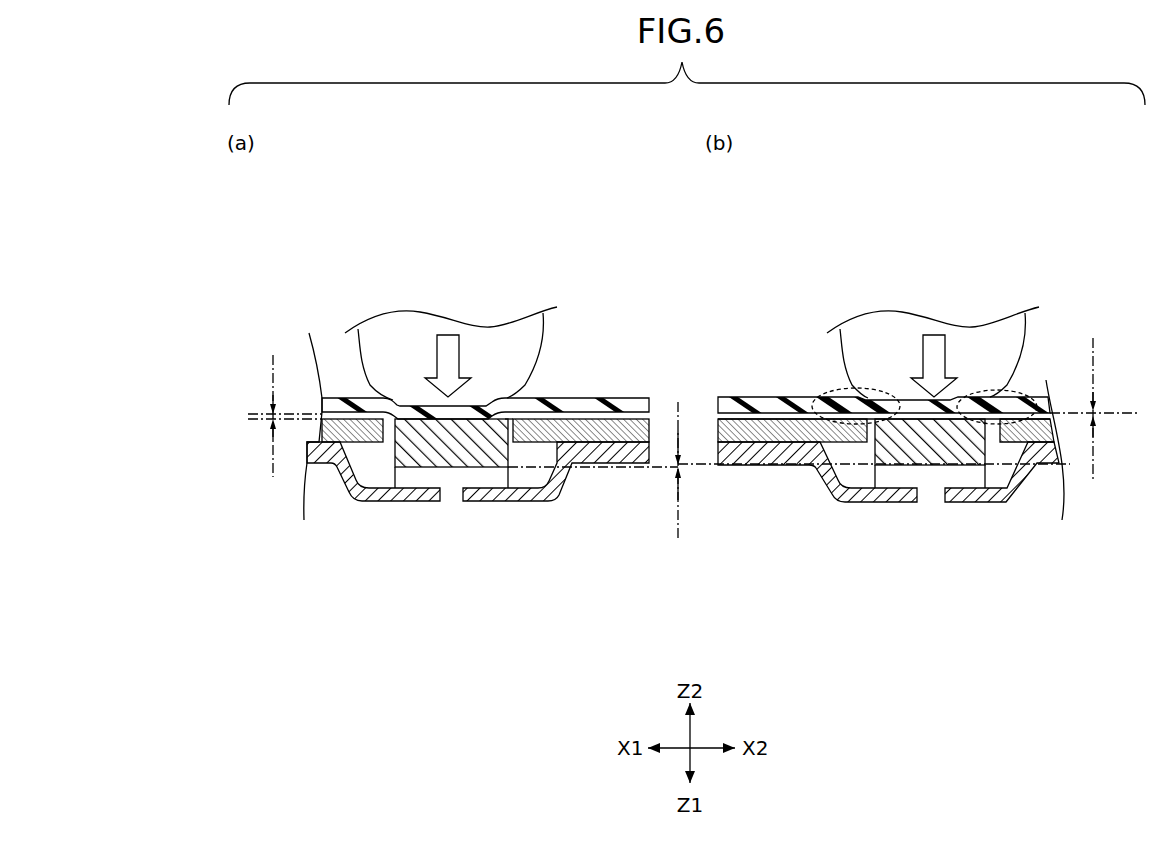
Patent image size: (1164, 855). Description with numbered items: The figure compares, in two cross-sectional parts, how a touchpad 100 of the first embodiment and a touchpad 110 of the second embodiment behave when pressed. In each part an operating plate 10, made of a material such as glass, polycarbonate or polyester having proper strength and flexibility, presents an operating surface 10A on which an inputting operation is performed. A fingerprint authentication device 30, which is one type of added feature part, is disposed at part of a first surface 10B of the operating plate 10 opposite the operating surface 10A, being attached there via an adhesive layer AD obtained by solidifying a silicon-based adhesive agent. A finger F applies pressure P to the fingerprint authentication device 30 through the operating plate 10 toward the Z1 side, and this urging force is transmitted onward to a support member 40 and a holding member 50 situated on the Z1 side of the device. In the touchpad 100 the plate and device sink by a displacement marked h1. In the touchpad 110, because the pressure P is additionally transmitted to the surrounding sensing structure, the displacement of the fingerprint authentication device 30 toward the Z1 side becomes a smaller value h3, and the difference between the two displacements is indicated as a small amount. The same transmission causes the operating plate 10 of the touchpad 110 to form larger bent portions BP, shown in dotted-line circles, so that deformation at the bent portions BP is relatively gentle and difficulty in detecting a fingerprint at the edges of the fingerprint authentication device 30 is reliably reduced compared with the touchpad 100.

The touchpad 100 is at (315, 285).
The touchpad 110 is at (752, 297).
The operating plate 10 is at (648, 398).
The operating surface 10A is at (615, 397).
The first surface 10B is at (609, 419).
The adhesive layer AD is at (484, 415).
The fingerprint authentication device 30 is at (417, 450).
The support member 40 is at (457, 478).
The holding member 50 is at (510, 500).
The bent portions BP is at (850, 424).
The finger F is at (410, 325).
The pressure P is at (691, 366).
The displacement h1 is at (280, 416).
The displacement h3 is at (1095, 410).